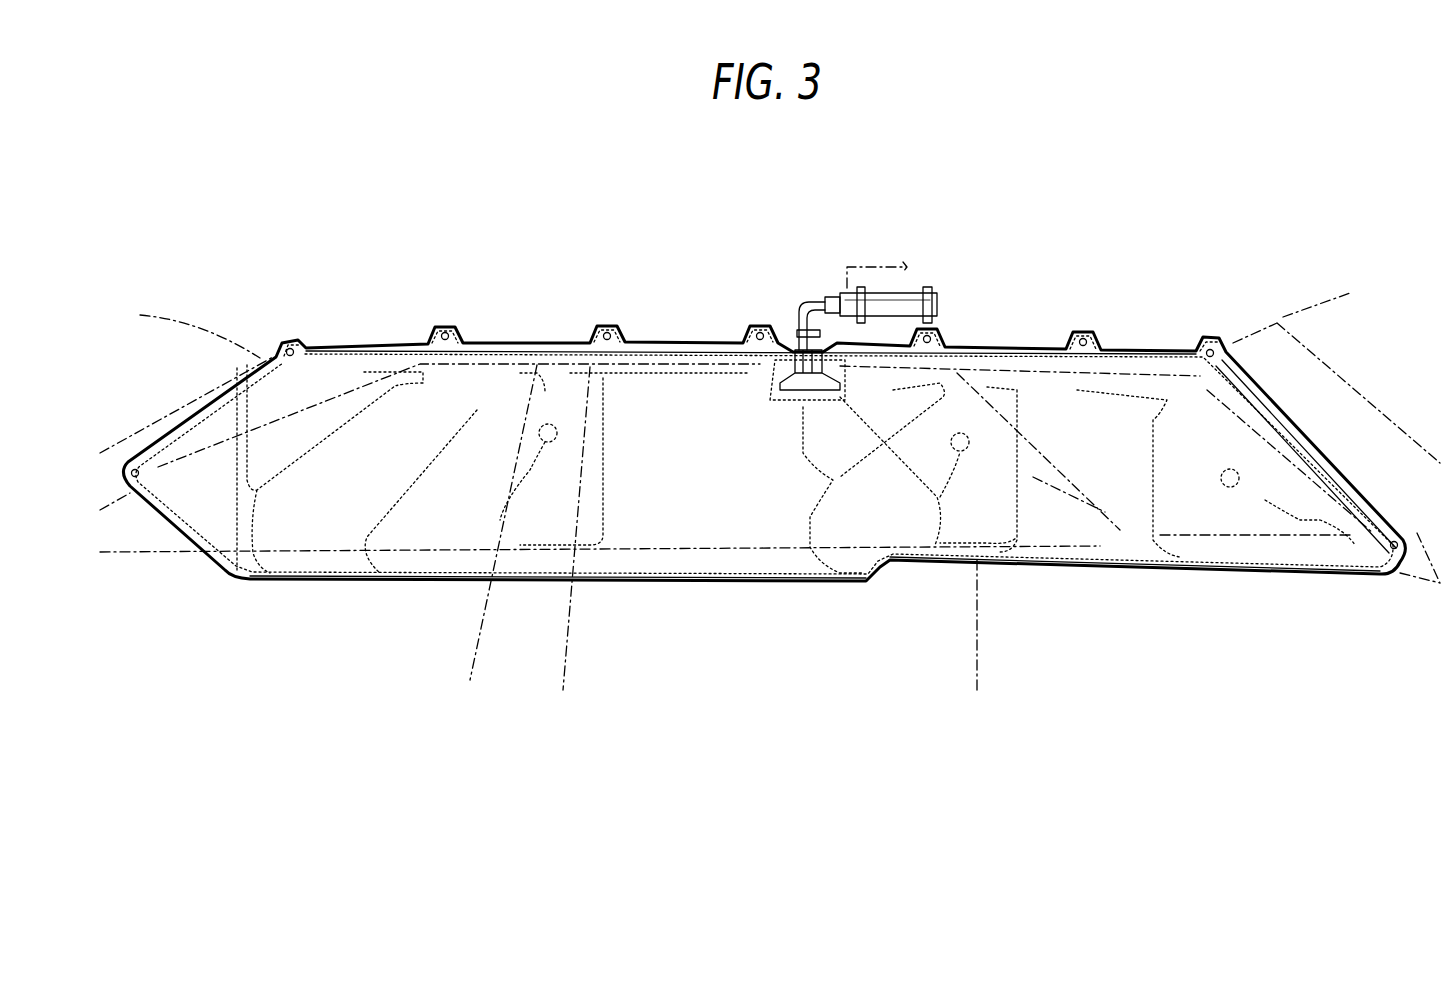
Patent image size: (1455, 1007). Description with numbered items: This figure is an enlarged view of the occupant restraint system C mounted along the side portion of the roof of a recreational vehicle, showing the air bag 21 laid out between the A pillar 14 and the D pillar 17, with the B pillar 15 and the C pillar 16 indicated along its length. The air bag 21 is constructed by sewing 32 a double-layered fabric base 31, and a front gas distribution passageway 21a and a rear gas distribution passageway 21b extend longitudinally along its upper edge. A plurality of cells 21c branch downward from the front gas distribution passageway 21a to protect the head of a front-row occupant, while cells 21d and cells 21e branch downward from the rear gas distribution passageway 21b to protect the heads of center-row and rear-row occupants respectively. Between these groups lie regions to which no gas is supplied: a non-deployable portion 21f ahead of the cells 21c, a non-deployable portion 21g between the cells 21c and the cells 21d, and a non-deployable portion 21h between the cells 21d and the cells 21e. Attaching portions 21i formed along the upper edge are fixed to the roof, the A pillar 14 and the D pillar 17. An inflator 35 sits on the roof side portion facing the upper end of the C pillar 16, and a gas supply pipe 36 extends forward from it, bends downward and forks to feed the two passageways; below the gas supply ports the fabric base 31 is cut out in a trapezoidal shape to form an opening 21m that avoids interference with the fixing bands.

The A pillar 14 is at (200, 400).
The B pillar 15 is at (580, 480).
The C pillar 16 is at (1043, 470).
The D pillar 17 is at (1343, 403).
The air bag 21 is at (650, 585).
The front gas distribution passageway 21a is at (517, 352).
The rear gas distribution passageway 21b is at (1037, 360).
The cells 21c is at (268, 482).
The cells 21d is at (905, 502).
The cells 21e is at (1278, 484).
The non-deployable portion 21f is at (182, 482).
The non-deployable portion 21g is at (687, 392).
The non-deployable portion 21h is at (1127, 489).
The attaching portions 21i is at (290, 347).
The opening 21m is at (797, 397).
The fabric base 31 is at (752, 537).
The sewing 32 is at (333, 445).
The inflator 35 is at (912, 298).
The gas supply pipe 36 is at (807, 310).
The occupant restraint system C is at (990, 237).